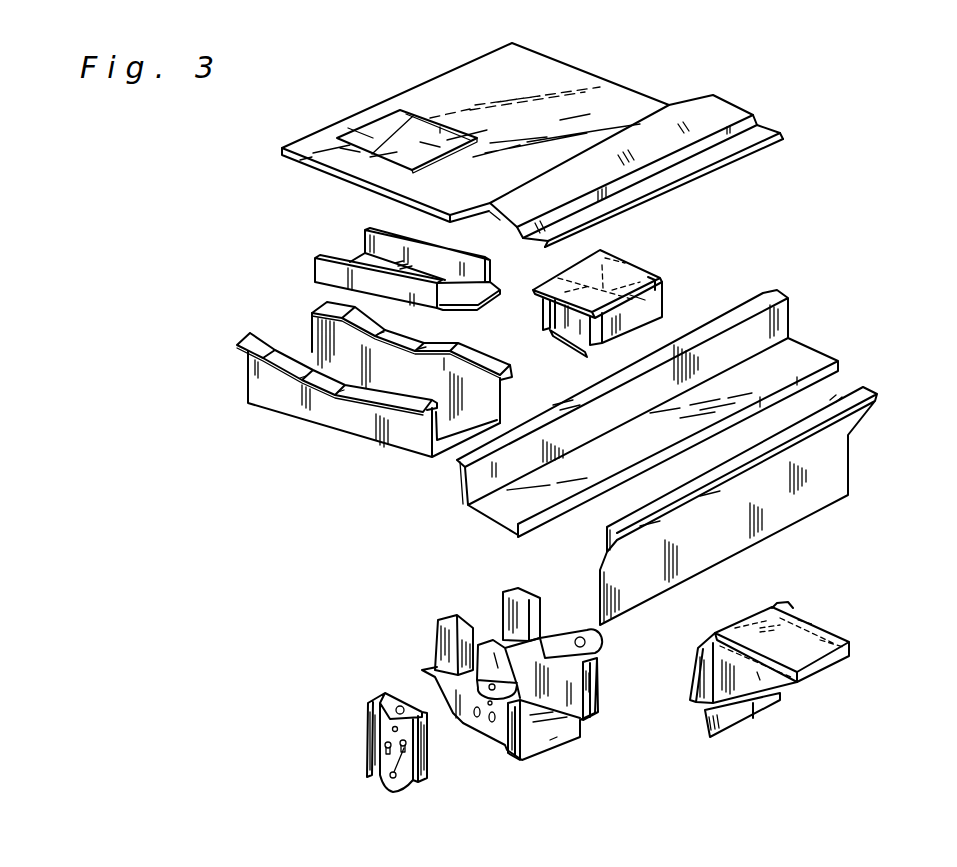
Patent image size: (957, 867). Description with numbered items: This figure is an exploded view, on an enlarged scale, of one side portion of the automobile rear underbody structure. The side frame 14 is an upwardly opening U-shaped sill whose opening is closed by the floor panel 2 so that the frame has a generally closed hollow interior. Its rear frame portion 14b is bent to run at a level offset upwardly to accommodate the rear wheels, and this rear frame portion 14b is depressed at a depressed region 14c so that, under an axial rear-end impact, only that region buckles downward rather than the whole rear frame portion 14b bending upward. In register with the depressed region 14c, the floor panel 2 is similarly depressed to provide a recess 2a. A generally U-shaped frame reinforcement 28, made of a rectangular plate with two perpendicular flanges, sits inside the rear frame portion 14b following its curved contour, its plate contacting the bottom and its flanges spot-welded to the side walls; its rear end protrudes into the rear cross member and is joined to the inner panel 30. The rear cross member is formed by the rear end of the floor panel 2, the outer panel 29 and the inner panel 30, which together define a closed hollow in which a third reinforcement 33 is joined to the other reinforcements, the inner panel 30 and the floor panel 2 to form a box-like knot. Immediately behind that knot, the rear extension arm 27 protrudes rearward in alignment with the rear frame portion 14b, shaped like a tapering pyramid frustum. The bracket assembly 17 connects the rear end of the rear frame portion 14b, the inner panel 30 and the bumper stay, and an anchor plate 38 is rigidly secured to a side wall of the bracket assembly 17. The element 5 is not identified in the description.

The floor panel 2 is at (643, 102).
The recess 2a is at (373, 140).
The flange channel 5 is at (737, 110).
The frame reinforcement 28 is at (367, 236).
The third reinforcement 33 is at (640, 256).
The side frame 14 is at (347, 390).
The rear frame portion 14b is at (322, 420).
The depressed region 14c is at (305, 363).
The inner panel 30 is at (783, 295).
The outer panel 29 is at (845, 468).
The rear extension arm 27 is at (833, 624).
The bracket assembly 17 is at (450, 697).
The anchor plate 38 is at (368, 738).